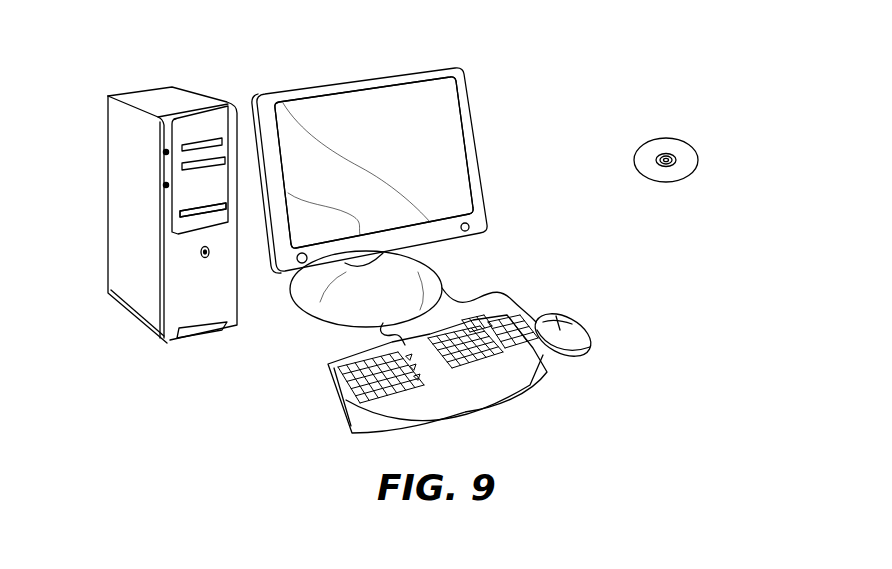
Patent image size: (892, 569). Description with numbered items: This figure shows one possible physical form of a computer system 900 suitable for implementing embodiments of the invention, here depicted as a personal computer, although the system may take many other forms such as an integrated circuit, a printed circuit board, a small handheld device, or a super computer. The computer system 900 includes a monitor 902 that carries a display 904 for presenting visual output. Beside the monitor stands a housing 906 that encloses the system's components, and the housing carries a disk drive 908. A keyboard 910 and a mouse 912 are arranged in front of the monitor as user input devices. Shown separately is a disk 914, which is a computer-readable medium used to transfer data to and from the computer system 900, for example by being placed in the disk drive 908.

The computer system 900 is at (593, 51).
The monitor 902 is at (480, 168).
The display 904 is at (437, 107).
The housing 906 is at (158, 97).
The disk drive 908 is at (217, 210).
The keyboard 910 is at (345, 405).
The mouse 912 is at (583, 326).
The disk 914 is at (685, 138).